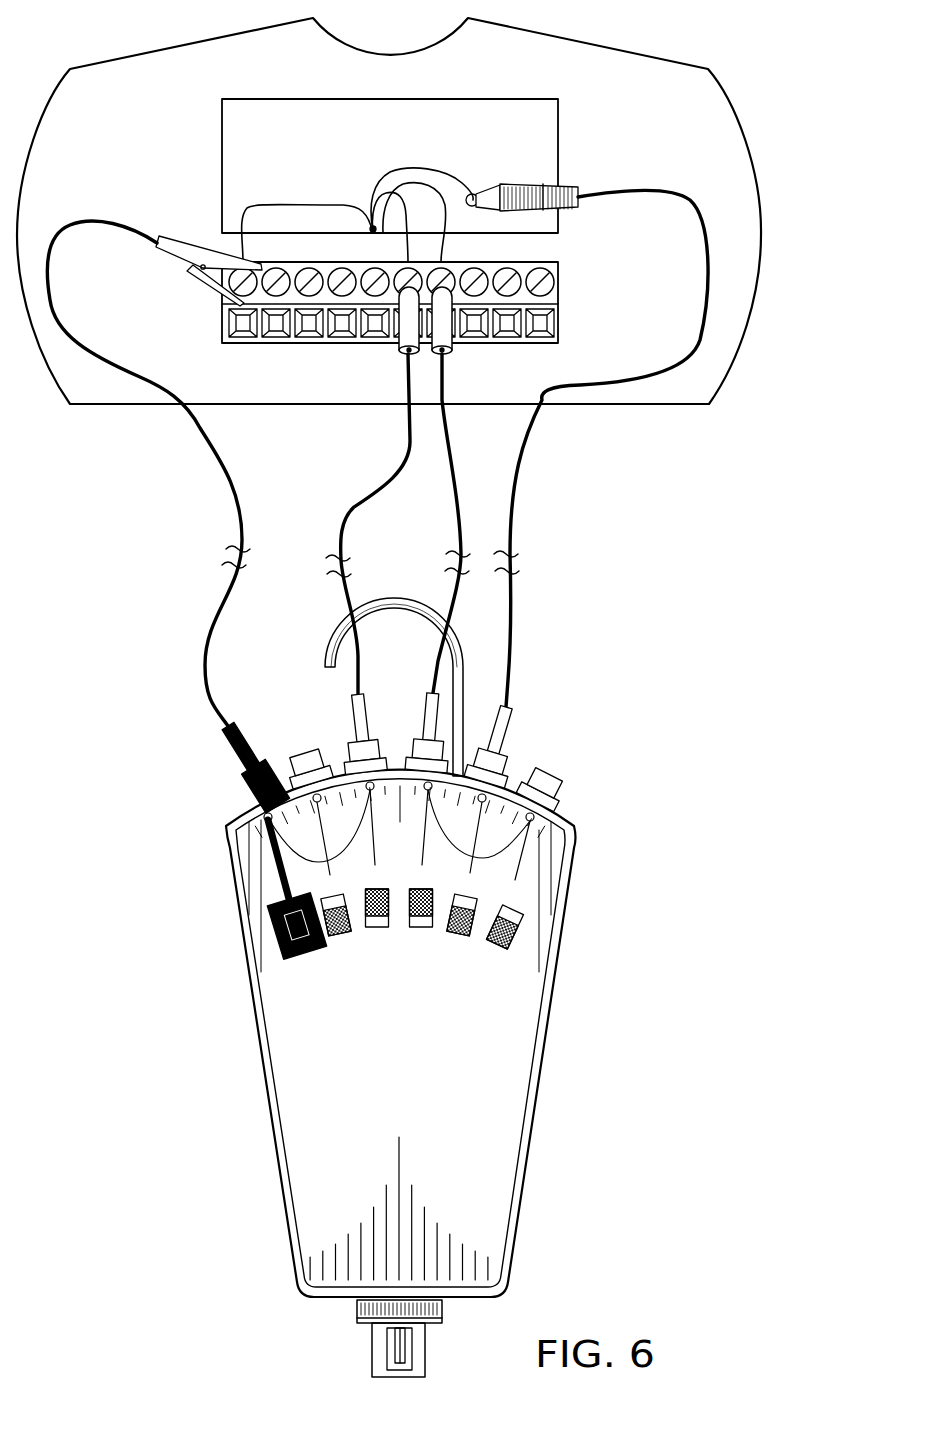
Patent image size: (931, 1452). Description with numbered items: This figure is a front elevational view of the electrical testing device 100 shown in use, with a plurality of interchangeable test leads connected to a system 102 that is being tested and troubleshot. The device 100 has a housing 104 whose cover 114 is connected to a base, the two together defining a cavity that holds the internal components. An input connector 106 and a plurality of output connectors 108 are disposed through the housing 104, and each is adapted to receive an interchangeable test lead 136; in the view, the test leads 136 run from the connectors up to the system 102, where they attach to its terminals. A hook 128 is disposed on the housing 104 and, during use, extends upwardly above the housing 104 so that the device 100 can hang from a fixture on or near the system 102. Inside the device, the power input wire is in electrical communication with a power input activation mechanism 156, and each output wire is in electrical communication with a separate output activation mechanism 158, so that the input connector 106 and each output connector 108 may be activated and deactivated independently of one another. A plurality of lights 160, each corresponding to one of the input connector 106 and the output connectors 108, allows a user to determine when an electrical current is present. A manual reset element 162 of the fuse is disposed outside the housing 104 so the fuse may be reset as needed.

The electrical testing device 100 is at (134, 509).
The system 102 is at (740, 50).
The housing 104 is at (300, 1175).
The input connector 106 is at (233, 807).
The plurality of output connectors 108 is at (290, 777).
The cover 114 is at (492, 1195).
The hook 128 is at (397, 600).
The interchangeable test lead 136 is at (350, 604).
The power input activation mechanism 156 is at (290, 963).
The output activation mechanism 158 is at (353, 1007).
The plurality of lights 160 is at (316, 802).
The manual reset element 162 is at (375, 1350).